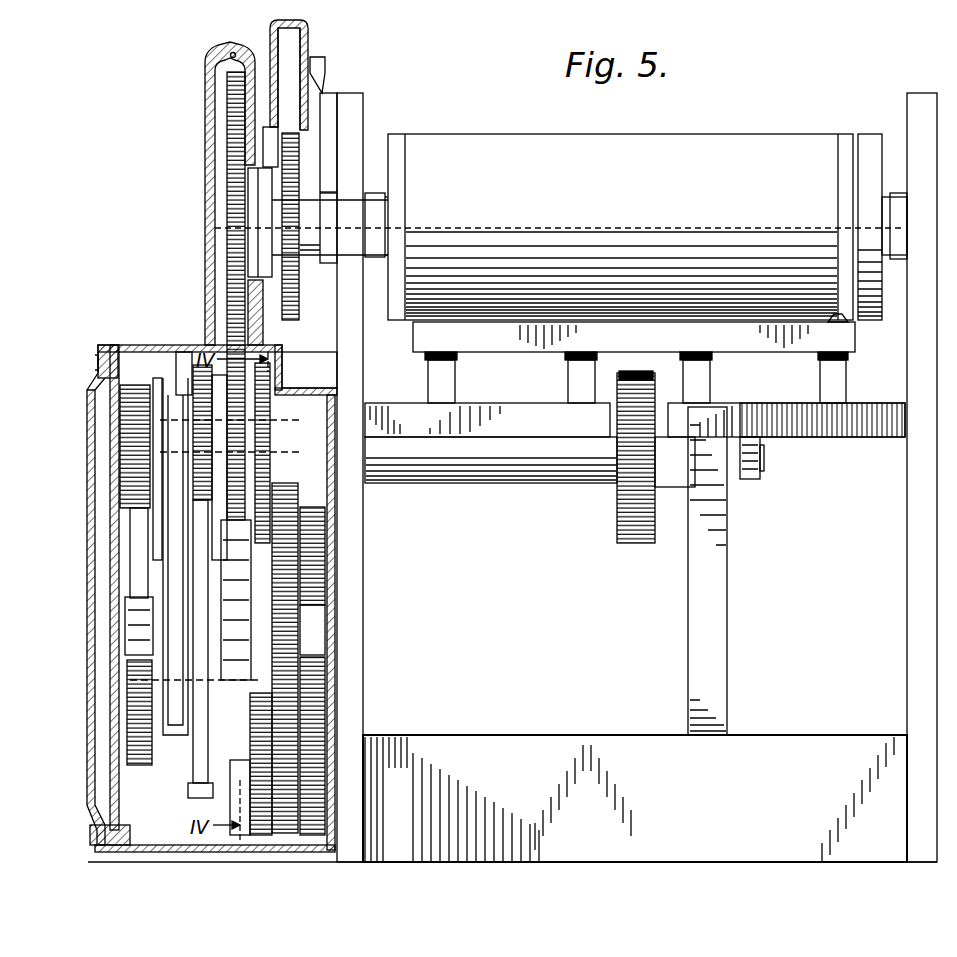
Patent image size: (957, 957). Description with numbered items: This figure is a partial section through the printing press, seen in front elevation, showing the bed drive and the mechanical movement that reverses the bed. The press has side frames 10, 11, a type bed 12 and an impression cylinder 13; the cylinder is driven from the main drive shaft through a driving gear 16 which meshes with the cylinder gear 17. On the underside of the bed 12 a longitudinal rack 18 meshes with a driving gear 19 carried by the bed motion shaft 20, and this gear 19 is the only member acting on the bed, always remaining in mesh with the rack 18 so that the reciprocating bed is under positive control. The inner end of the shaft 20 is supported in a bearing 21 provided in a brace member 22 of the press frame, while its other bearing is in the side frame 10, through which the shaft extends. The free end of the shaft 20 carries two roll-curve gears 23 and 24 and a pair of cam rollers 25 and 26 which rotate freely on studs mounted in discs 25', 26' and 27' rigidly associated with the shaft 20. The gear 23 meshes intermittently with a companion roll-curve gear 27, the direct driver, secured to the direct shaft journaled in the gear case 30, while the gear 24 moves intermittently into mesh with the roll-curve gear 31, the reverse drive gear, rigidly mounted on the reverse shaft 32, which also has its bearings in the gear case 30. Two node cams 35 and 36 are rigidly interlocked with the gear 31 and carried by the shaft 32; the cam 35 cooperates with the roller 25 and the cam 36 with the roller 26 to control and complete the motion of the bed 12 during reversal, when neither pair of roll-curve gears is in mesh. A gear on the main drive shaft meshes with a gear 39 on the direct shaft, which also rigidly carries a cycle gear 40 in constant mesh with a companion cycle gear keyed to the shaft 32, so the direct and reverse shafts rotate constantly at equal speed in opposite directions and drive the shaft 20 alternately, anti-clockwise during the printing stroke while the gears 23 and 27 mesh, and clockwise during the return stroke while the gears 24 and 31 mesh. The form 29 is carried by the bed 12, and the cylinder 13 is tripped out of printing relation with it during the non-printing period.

The side frame 10 is at (355, 712).
The side frame 11 is at (915, 622).
The type bed 12 is at (777, 335).
The impression cylinder 13 is at (720, 145).
The driving gear 16 is at (284, 386).
The cylinder gear 17 is at (237, 212).
The rack 18 is at (637, 370).
The driving gear 19 is at (618, 528).
The bed motion shaft 20 is at (502, 480).
The bearing 21 is at (735, 492).
The brace member 22 is at (720, 585).
The roll-curve gear 23 is at (270, 413).
The roll-curve gear 24 is at (100, 378).
The cam roller 25 is at (178, 407).
The disc 25' is at (191, 426).
The cam roller 26 is at (115, 556).
The disc 26' is at (209, 262).
The roll-curve gear 27 is at (348, 658).
The disc 27' is at (98, 574).
The form 29 is at (840, 316).
The gear case 30 is at (333, 655).
The roll-curve gear 31 is at (118, 496).
The reverse shaft 32 is at (327, 602).
The node cam 35 is at (195, 468).
The node cam 36 is at (170, 436).
The gear 39 is at (310, 757).
The cycle gear 40 is at (278, 795).